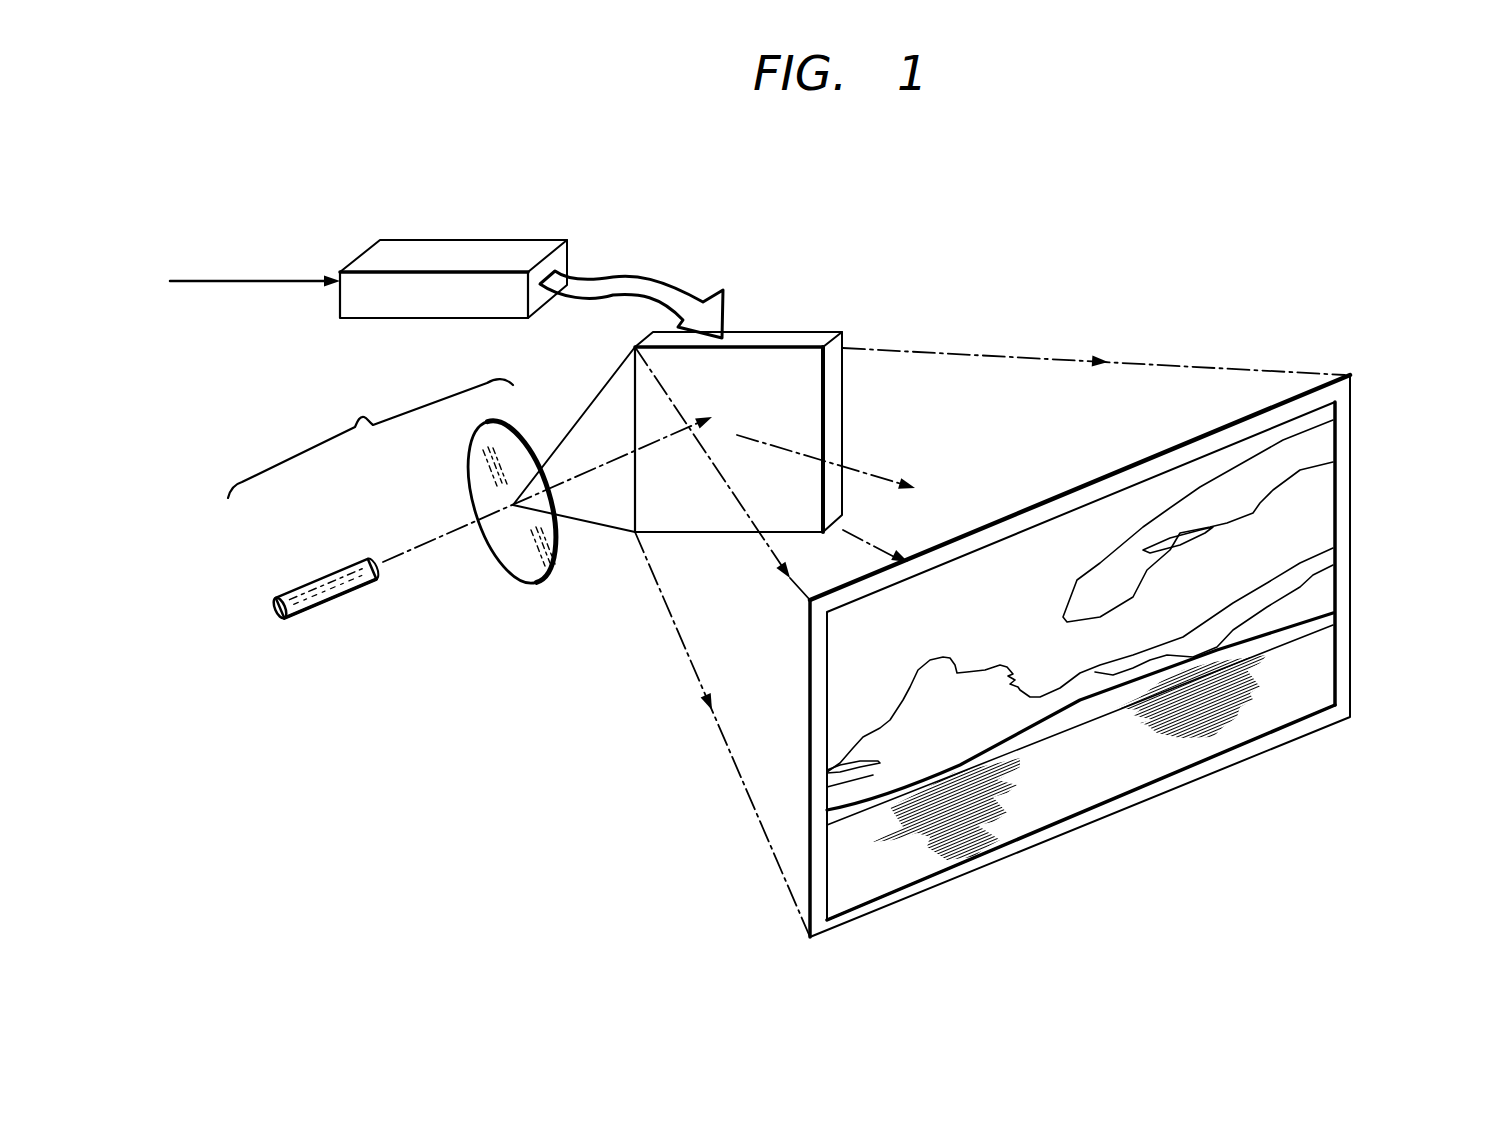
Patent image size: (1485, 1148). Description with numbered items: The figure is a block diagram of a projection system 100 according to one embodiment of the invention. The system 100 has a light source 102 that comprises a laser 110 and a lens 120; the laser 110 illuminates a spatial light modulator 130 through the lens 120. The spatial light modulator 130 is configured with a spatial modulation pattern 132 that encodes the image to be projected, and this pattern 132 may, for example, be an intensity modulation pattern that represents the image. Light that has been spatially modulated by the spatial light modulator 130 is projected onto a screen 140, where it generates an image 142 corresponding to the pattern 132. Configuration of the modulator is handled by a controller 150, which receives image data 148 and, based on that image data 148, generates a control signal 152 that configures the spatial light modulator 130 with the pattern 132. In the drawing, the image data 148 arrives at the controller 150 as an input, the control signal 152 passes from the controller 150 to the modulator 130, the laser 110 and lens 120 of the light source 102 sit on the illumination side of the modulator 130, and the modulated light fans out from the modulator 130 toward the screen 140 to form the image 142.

The projection system 100 is at (850, 147).
The light source 102 is at (370, 437).
The laser 110 is at (330, 597).
The lens 120 is at (532, 570).
The spatial light modulator 130 is at (765, 338).
The spatial modulation pattern 132 is at (810, 416).
The screen 140 is at (1345, 520).
The image 142 is at (1112, 782).
The image data 148 is at (292, 282).
The controller 150 is at (438, 253).
The control signal 152 is at (630, 282).